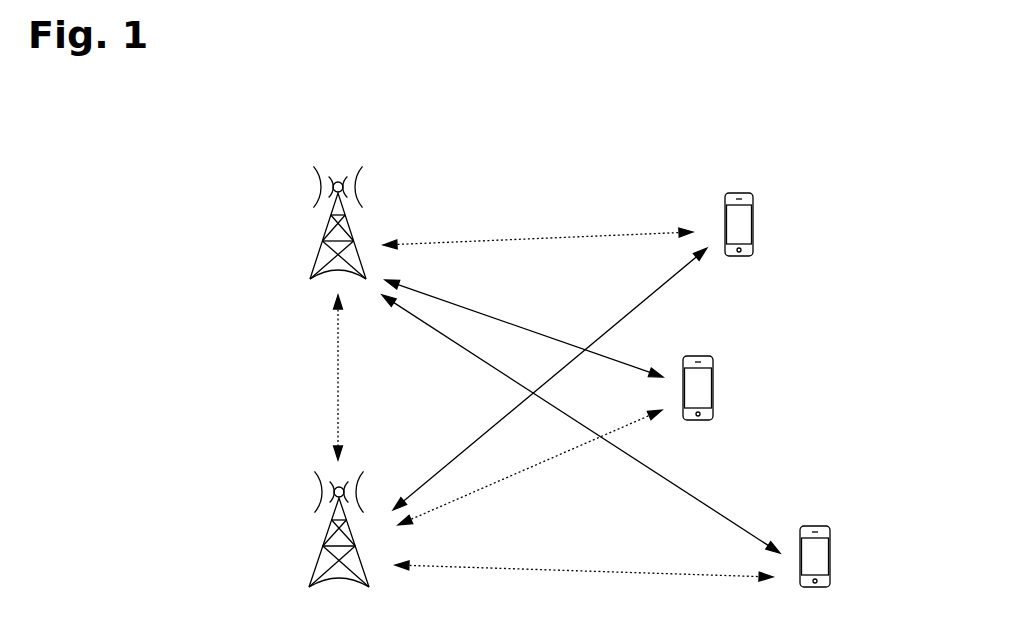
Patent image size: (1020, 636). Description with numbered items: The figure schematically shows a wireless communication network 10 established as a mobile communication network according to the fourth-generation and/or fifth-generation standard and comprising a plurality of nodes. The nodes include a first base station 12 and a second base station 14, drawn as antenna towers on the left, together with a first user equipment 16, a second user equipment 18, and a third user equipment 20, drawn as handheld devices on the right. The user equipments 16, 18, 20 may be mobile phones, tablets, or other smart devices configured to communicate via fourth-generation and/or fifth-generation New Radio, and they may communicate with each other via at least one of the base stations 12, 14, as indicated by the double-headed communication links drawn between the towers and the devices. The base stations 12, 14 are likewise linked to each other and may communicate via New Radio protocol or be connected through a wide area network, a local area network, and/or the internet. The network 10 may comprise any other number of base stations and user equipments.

The wireless communication network 10 is at (533, 150).
The first base station 12 is at (313, 265).
The second base station 14 is at (318, 560).
The first user equipment 16 is at (753, 225).
The second user equipment 18 is at (713, 390).
The third user equipment 20 is at (830, 563).